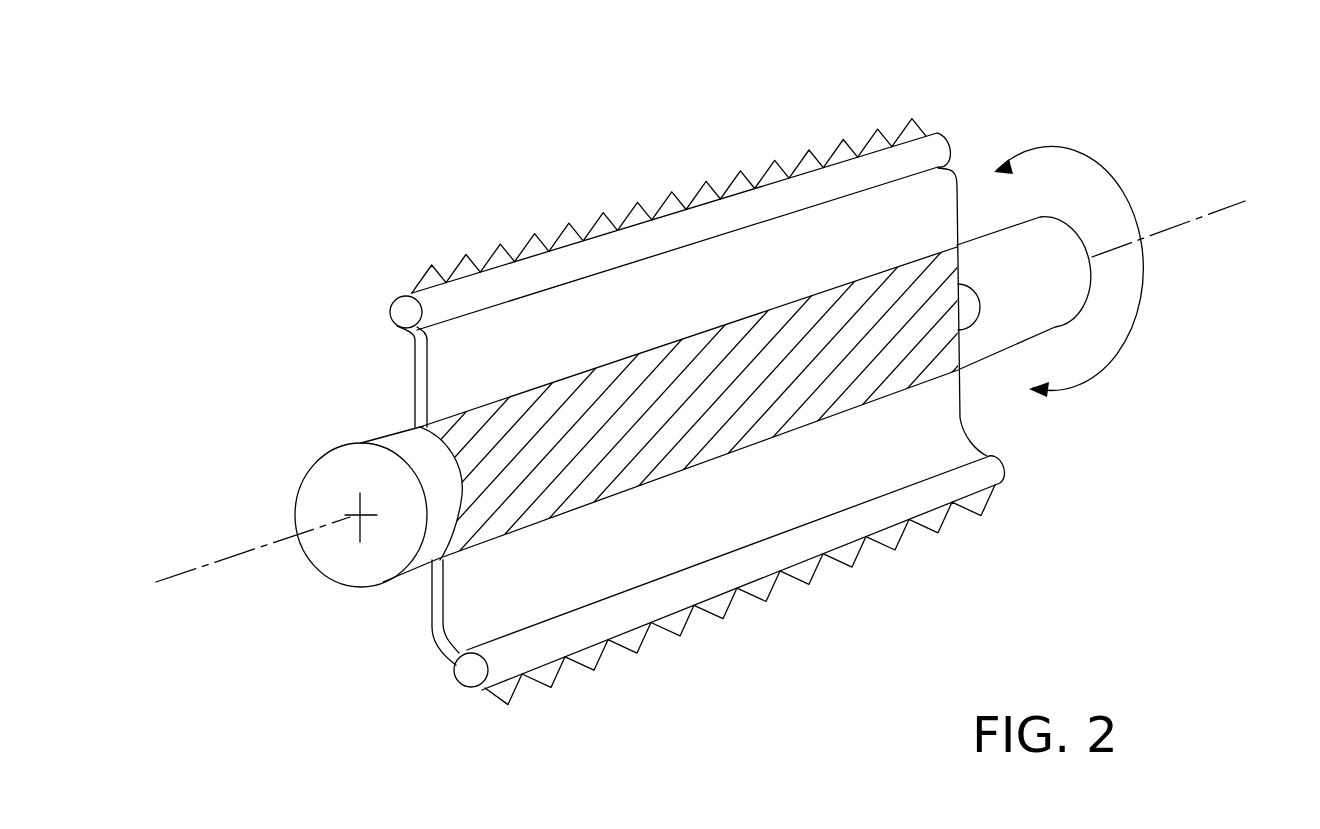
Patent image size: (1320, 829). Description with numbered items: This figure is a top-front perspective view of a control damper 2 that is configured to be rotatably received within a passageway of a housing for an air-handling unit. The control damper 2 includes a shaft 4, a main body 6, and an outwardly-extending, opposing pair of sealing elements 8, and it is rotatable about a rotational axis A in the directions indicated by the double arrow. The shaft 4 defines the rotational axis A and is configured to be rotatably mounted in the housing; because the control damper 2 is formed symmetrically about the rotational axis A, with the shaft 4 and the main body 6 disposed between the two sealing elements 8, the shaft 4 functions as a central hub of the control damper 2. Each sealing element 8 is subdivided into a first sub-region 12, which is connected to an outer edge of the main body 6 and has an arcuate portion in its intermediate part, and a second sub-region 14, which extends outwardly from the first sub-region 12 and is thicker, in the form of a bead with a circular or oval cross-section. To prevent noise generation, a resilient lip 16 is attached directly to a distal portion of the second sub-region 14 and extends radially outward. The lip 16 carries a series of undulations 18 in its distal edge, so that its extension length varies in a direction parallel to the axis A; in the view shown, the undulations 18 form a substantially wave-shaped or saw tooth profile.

The control damper 2 is at (203, 171).
The shaft 4 is at (362, 562).
The main body 6 is at (900, 343).
The sealing elements 8 is at (676, 313).
The first sub-region 12 is at (420, 386).
The second sub-region 14 is at (404, 312).
The resilient lip 16 is at (487, 256).
The undulations 18 is at (780, 178).
The rotational axis A is at (1213, 213).